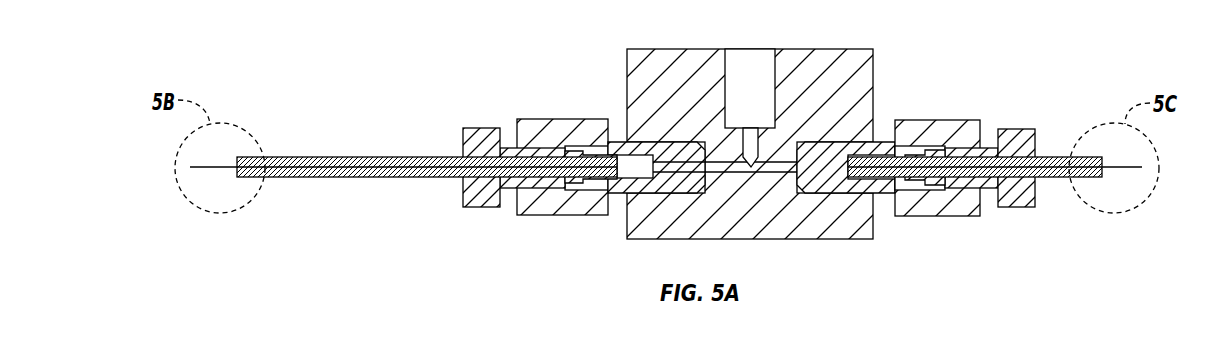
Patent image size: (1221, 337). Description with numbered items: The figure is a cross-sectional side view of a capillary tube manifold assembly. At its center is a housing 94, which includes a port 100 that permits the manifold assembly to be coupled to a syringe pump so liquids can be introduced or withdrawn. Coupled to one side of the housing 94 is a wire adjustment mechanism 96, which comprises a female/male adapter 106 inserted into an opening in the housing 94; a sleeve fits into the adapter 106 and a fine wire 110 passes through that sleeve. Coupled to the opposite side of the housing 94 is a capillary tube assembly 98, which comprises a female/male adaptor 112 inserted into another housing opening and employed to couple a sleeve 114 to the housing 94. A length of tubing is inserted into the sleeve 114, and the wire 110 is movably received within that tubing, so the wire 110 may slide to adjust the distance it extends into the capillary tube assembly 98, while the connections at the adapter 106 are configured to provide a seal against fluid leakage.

The housing 94 is at (852, 52).
The wire adjustment mechanism 96 is at (968, 120).
The capillary tube assembly 98 is at (562, 120).
The port 100 is at (749, 52).
The female/male adapter 106 is at (907, 120).
The wire 110 is at (1127, 165).
The female/male adaptor 112 is at (477, 207).
The sleeve 114 is at (355, 178).